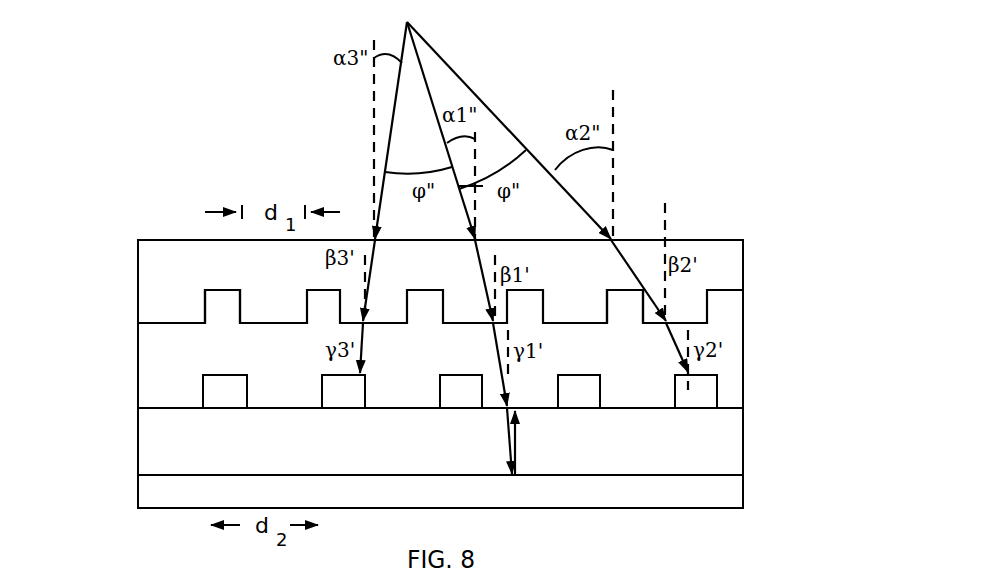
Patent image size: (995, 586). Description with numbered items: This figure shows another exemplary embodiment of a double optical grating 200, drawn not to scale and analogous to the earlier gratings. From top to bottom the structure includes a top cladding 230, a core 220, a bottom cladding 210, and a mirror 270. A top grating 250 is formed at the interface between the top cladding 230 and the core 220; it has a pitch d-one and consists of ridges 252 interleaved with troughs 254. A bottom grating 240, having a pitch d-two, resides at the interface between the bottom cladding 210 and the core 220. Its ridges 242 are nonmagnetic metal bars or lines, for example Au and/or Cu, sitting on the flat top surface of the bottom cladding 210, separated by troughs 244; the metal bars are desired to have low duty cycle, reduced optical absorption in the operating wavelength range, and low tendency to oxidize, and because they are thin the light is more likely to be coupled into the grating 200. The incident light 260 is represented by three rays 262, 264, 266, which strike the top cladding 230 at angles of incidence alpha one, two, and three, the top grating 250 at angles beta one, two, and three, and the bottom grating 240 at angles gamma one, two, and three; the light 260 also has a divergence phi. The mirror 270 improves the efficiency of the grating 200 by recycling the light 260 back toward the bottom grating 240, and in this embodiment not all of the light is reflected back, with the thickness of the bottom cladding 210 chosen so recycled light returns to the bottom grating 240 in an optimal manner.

The double optical grating 200 is at (198, 49).
The bottom cladding 210 is at (743, 455).
The core 220 is at (743, 390).
The top cladding 230 is at (677, 240).
The bottom grating 240 is at (126, 392).
The ridges 242 is at (578, 430).
The troughs 244 is at (653, 423).
The top grating 250 is at (126, 307).
The ridges 252 is at (192, 308).
The troughs 254 is at (694, 312).
The light 260 is at (290, 157).
The ray 262 is at (430, 88).
The ray 264 is at (508, 127).
The ray 266 is at (390, 137).
The mirror 270 is at (138, 495).